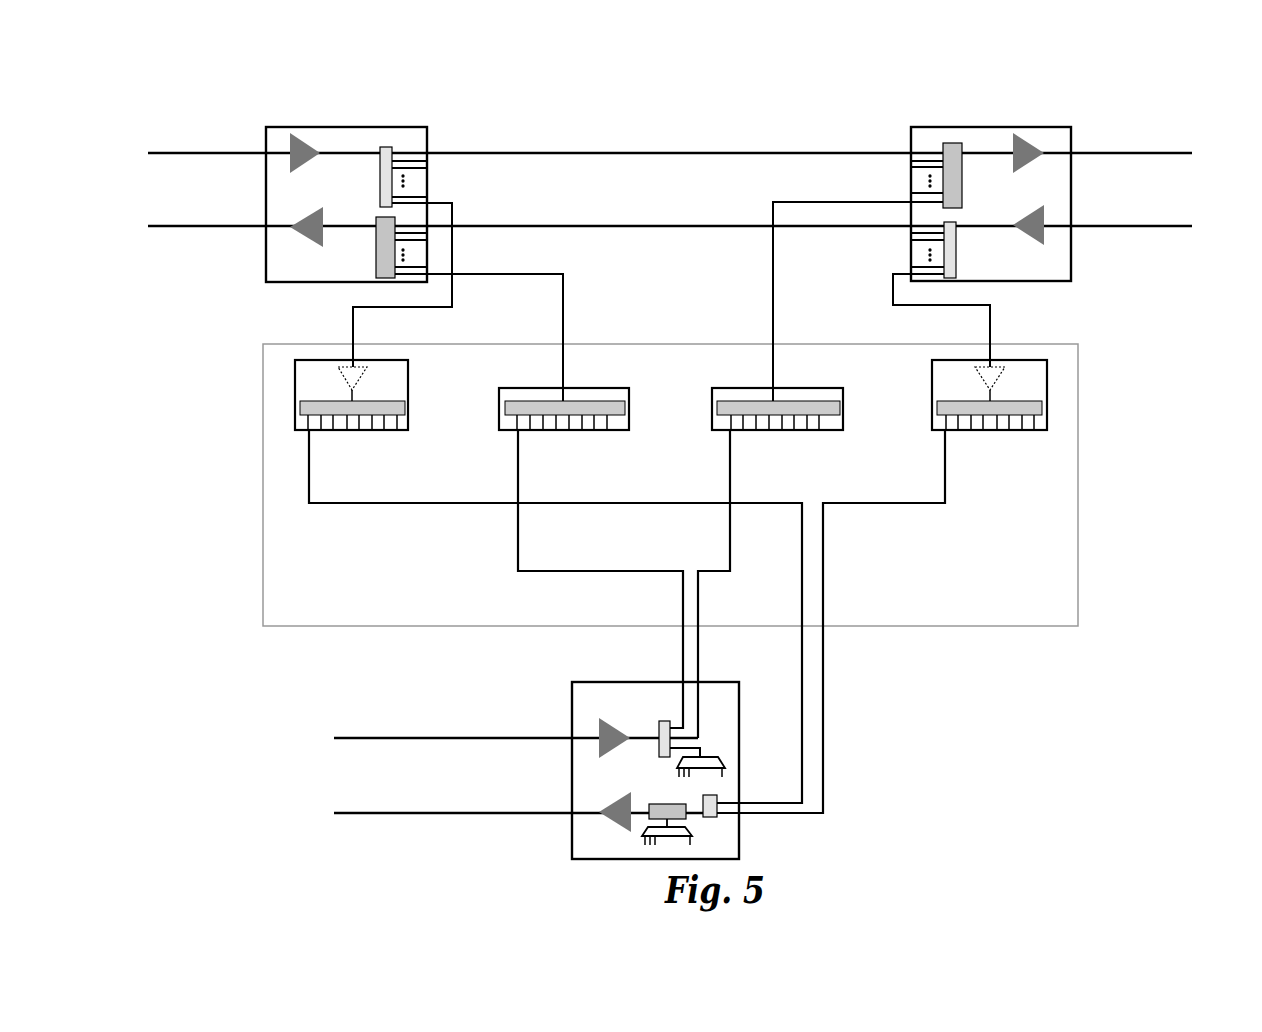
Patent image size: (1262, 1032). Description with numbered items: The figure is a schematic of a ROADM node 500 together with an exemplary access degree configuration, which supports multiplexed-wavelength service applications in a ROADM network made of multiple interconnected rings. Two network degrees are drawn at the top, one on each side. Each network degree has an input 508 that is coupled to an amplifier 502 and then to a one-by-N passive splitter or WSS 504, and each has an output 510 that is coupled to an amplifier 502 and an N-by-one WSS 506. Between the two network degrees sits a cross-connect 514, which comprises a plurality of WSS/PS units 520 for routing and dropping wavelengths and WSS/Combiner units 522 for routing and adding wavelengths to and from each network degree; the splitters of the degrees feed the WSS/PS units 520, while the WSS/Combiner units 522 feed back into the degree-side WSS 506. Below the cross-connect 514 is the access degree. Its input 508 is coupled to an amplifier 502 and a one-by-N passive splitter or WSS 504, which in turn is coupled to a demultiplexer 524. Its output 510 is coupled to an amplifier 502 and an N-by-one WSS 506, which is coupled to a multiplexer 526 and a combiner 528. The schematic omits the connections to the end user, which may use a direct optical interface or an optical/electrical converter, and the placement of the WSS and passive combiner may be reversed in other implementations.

The ROADM node 500 is at (666, 446).
The amplifier 502 is at (297, 135).
The 1×N PS or WSS 504 is at (387, 147).
The N×1 WSS 506 is at (373, 258).
The input 508 is at (168, 150).
The output 510 is at (186, 226).
The cross-connect 514 is at (1080, 513).
The WSS/PS 520 is at (410, 380).
The WSS/Combiner 522 is at (630, 421).
The demultiplexer 524 is at (725, 762).
The multiplexer 526 is at (677, 833).
The combiner 528 is at (717, 800).